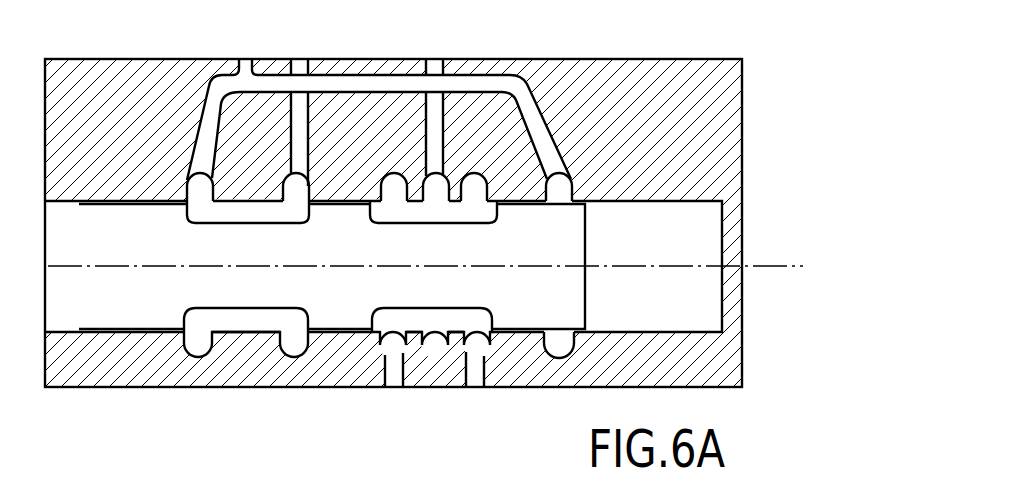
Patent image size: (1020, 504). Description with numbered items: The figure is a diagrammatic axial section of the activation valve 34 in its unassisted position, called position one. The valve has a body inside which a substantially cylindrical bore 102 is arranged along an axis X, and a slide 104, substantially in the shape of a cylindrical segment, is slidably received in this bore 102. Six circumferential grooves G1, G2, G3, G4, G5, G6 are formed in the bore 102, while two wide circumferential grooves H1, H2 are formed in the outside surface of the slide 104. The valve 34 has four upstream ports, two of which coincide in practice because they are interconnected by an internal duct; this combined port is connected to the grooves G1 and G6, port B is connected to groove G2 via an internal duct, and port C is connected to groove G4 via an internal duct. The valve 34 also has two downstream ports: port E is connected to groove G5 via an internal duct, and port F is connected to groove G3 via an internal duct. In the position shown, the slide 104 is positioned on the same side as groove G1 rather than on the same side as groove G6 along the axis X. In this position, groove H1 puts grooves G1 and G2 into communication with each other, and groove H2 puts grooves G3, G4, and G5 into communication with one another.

The activation valve 34 is at (757, 163).
The bore 102 is at (690, 201).
The slide 104 is at (517, 302).
The axis X is at (786, 266).
The port B is at (304, 66).
The port C is at (433, 66).
The port E is at (477, 378).
The port F is at (394, 378).
The circumferential groove G1 is at (198, 190).
The circumferential groove G2 is at (296, 190).
The circumferential groove G3 is at (396, 190).
The circumferential groove G4 is at (436, 190).
The circumferential groove G5 is at (477, 190).
The circumferential groove G6 is at (559, 190).
The circumferential groove of the slide H1 is at (254, 308).
The circumferential groove of the slide H2 is at (439, 308).